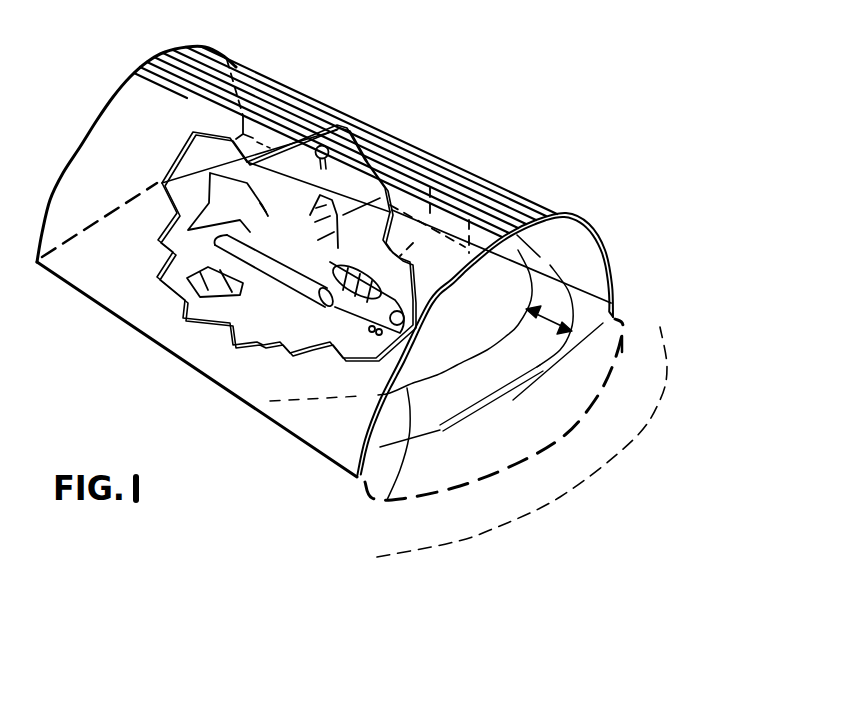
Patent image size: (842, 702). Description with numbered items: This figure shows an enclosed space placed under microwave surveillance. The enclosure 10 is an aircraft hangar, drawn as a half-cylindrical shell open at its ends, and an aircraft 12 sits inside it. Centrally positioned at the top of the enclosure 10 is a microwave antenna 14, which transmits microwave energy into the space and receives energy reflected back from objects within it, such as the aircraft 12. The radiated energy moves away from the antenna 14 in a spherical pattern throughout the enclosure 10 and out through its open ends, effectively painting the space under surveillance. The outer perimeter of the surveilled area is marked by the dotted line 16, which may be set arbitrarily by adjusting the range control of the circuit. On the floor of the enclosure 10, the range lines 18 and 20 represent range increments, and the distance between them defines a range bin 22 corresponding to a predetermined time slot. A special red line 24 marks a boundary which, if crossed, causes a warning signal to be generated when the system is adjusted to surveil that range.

The enclosure 10 is at (523, 193).
The aircraft 12 is at (207, 288).
The microwave antenna 14 is at (335, 131).
The dotted line 16 is at (667, 372).
The range line 18 is at (415, 372).
The range line 20 is at (452, 372).
The range bin 22 is at (530, 357).
The red line 24 is at (623, 343).